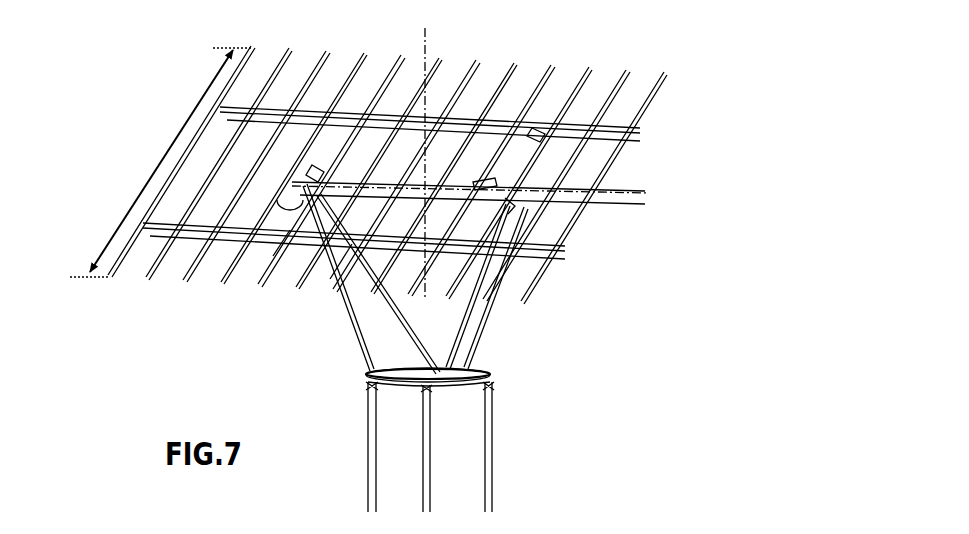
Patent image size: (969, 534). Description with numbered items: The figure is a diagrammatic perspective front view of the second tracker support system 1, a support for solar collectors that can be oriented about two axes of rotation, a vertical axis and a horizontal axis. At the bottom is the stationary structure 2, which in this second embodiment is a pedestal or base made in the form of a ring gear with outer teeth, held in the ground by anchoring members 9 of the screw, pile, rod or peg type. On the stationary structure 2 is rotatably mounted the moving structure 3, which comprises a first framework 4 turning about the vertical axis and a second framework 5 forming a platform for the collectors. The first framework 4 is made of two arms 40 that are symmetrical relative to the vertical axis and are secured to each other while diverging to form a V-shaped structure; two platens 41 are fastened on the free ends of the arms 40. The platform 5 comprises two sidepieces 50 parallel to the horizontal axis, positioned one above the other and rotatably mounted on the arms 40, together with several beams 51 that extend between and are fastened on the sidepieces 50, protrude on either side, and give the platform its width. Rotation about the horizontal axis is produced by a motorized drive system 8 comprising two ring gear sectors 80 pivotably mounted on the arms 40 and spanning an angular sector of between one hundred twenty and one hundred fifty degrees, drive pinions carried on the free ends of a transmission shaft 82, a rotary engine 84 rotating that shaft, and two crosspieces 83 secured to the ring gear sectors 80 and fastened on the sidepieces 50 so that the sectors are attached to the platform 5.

The tracker support system 1 is at (628, 376).
The stationary structure 2 is at (350, 380).
The moving structure 3 is at (692, 72).
The first framework 4 is at (529, 343).
The second framework 5 is at (552, 279).
The motorized drive system 8 is at (532, 188).
The anchoring members 9 is at (370, 486).
The arms 40 is at (357, 330).
The platens 41 is at (273, 256).
The sidepieces 50 is at (638, 142).
The beams 51 is at (389, 182).
The ring gear sectors 80 is at (306, 178).
The transmission shaft 82 is at (330, 279).
The crosspieces 83 is at (323, 113).
The rotary engine 84 is at (512, 213).